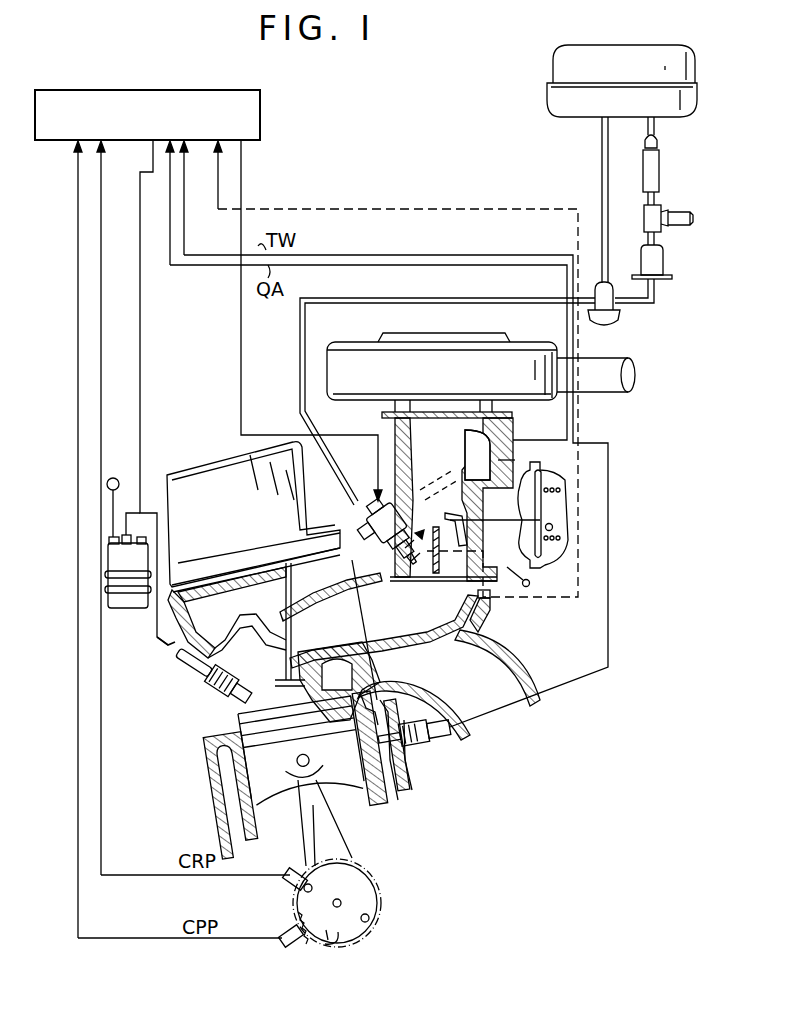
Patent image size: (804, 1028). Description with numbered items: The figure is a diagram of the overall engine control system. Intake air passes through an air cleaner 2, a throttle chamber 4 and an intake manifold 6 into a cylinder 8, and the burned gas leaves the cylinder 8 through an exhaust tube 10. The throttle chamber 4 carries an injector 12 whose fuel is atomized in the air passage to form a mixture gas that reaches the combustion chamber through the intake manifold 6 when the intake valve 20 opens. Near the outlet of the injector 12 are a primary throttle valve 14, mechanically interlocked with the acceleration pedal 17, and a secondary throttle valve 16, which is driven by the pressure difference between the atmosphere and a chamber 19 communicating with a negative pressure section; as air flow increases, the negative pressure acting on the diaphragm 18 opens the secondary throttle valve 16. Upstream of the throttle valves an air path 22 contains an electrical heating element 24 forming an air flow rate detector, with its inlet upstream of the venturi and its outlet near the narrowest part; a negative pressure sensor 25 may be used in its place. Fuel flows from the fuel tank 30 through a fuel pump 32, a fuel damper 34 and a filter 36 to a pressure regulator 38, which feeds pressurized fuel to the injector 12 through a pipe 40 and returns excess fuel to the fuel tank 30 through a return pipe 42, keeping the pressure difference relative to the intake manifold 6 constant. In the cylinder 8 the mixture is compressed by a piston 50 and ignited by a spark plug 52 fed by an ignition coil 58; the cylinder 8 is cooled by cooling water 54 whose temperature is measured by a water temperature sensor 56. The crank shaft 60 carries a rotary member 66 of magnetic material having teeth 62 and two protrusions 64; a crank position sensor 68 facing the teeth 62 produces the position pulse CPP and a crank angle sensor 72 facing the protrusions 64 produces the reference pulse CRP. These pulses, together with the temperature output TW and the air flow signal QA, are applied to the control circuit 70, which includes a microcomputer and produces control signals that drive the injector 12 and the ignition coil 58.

The air cleaner 2 is at (512, 340).
The throttle chamber 4 is at (395, 466).
The intake manifold 6 is at (497, 633).
The cylinder 8 is at (208, 784).
The exhaust tube 10 is at (532, 666).
The injector 12 is at (368, 552).
The primary throttle valve 14 is at (402, 510).
The secondary throttle valve 16 is at (460, 560).
The acceleration pedal 17 is at (530, 585).
The diaphragm 18 is at (530, 510).
The chamber 19 is at (557, 503).
The intake valve 20 is at (210, 700).
The air path 22 is at (515, 460).
The electrical heating element 24 is at (508, 425).
The negative pressure sensor 25 is at (486, 600).
The fuel tank 30 is at (548, 66).
The fuel pump 32 is at (660, 172).
The fuel damper 34 is at (644, 224).
The filter 36 is at (669, 265).
The pressure regulator 38 is at (618, 322).
The pipe 40 is at (420, 298).
The return pipe 42 is at (602, 142).
The piston 50 is at (262, 812).
The spark plug 52 is at (178, 668).
The cooling water 54 is at (396, 800).
The water temperature sensor 56 is at (418, 750).
The ignition coil 58 is at (120, 608).
The crank shaft 60 is at (341, 903).
The teeth 62 is at (300, 946).
The protrusions 64 is at (368, 923).
The rotary member 66 is at (327, 946).
The crank position sensor 68 is at (284, 947).
The control circuit 70 is at (260, 128).
The crank angle sensor 72 is at (296, 870).